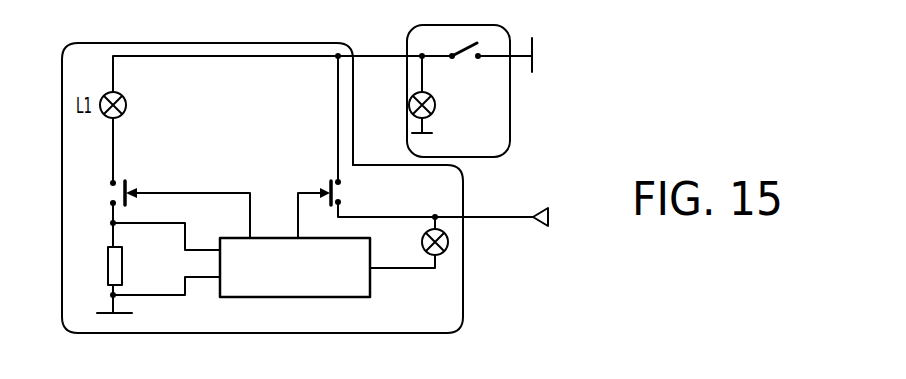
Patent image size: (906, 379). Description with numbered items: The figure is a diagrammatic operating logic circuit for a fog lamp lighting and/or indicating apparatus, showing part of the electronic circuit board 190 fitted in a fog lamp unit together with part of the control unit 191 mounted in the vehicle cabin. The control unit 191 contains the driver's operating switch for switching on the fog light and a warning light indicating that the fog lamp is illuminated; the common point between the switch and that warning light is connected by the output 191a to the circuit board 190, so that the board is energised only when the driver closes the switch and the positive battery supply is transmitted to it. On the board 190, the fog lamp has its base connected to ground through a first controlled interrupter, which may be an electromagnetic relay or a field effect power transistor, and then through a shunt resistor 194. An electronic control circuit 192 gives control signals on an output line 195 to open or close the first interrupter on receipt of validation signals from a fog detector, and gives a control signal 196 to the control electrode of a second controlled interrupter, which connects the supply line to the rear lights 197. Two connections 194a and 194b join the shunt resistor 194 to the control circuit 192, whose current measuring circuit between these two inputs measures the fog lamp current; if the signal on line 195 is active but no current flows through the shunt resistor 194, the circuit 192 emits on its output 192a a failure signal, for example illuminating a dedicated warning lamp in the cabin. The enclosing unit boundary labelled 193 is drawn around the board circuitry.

The electronic circuit board 190 is at (249, 39).
The control unit 191 is at (515, 29).
The output from the control unit 191a is at (362, 55).
The electronic control circuit 192 is at (336, 297).
The output of the control circuit 192a is at (388, 272).
The flasher unit 193 is at (473, 267).
The shunt resistor 194 is at (146, 283).
The first connection to the control circuit 194a is at (165, 222).
The second connection to the control circuit 194b is at (187, 286).
The output line 195 is at (215, 191).
The control signal 196 is at (296, 209).
The rear lights 197 is at (532, 214).